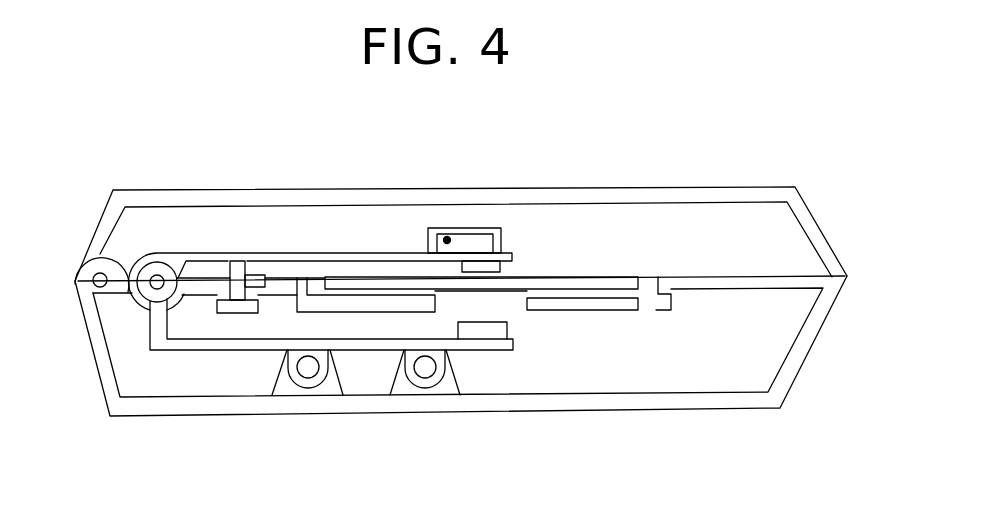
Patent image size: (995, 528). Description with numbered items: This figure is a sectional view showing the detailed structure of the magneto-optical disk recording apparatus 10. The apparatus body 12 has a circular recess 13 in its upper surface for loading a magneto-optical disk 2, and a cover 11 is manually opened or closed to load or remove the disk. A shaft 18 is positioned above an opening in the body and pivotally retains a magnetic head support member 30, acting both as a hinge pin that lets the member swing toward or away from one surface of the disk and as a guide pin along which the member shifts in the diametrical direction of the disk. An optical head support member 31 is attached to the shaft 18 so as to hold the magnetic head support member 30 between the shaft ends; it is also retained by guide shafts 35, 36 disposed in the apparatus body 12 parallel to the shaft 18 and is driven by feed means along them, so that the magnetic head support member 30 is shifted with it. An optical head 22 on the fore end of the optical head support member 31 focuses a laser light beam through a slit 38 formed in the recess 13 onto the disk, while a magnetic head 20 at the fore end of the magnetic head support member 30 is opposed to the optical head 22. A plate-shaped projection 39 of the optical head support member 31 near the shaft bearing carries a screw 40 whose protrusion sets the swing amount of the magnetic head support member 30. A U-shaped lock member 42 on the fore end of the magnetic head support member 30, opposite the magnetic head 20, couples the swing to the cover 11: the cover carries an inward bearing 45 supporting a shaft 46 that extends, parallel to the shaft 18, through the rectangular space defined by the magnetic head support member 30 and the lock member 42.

The magneto-optical disk 2 is at (608, 277).
The magneto-optical disk recording apparatus 10 is at (818, 390).
The cover 11 is at (722, 188).
The apparatus body 12 is at (833, 305).
The circular recess 13 is at (647, 292).
The shaft 18 is at (140, 297).
The magnetic head 20 is at (500, 266).
The optical head 22 is at (495, 331).
The magnetic head support member 30 is at (192, 251).
The optical head support member 31 is at (197, 352).
The guide shaft 35 is at (309, 378).
The guide shaft 36 is at (430, 378).
The slit 38 is at (495, 305).
The plate-shaped projection 39 is at (258, 272).
The screw 40 is at (242, 312).
The U-shaped lock member 42 is at (472, 231).
The bearing 45 is at (440, 227).
The shaft 46 is at (440, 239).